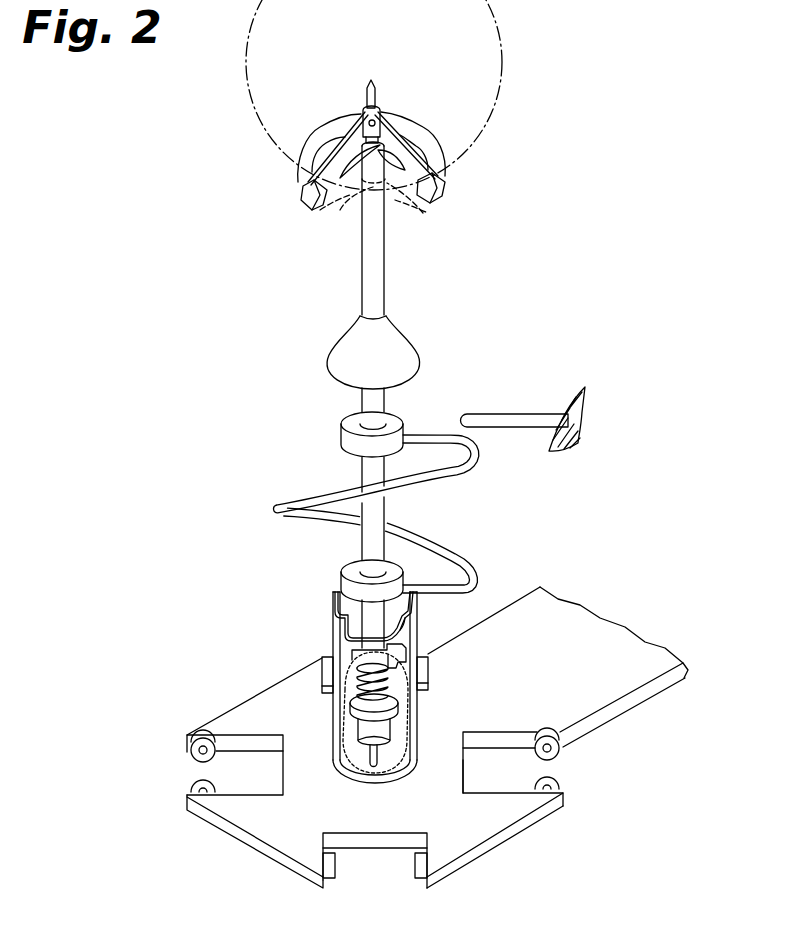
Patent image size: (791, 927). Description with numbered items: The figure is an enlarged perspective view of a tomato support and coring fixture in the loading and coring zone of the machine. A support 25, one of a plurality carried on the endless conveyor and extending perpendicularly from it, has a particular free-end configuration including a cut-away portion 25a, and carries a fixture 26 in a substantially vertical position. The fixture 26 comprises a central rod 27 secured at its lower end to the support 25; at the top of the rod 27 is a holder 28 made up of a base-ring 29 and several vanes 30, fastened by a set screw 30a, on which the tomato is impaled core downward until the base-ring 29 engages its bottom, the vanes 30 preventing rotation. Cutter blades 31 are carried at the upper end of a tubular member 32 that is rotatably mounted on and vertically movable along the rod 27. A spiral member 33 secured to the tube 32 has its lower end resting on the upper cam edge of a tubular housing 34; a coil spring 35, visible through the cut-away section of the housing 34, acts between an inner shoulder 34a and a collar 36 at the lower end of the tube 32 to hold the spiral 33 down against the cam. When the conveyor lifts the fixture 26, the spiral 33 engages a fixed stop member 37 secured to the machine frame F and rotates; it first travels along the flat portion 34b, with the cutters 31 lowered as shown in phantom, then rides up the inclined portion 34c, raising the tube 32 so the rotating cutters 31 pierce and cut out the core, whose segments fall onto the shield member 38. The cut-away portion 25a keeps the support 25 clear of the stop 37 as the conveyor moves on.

The support 25 is at (540, 668).
The cut-away portion 25a is at (463, 765).
The fixture 26 is at (293, 431).
The central rod 27 is at (373, 93).
The holder 28 is at (248, 207).
The base-ring 29 is at (313, 205).
The vanes 30 is at (353, 123).
The set screw 30a is at (365, 115).
The cutter blades 31 is at (350, 180).
The tubular member 32 is at (378, 278).
The spiral member 33 is at (276, 507).
The tubular housing 34 is at (333, 627).
The inner shoulder 34a is at (398, 662).
The flat portion 34b is at (350, 640).
The inclined portion 34c is at (398, 626).
The coil spring 35 is at (397, 697).
The collar 36 is at (390, 716).
The fixed stop member 37 is at (522, 416).
The shield member 38 is at (403, 373).
The frame F is at (583, 418).